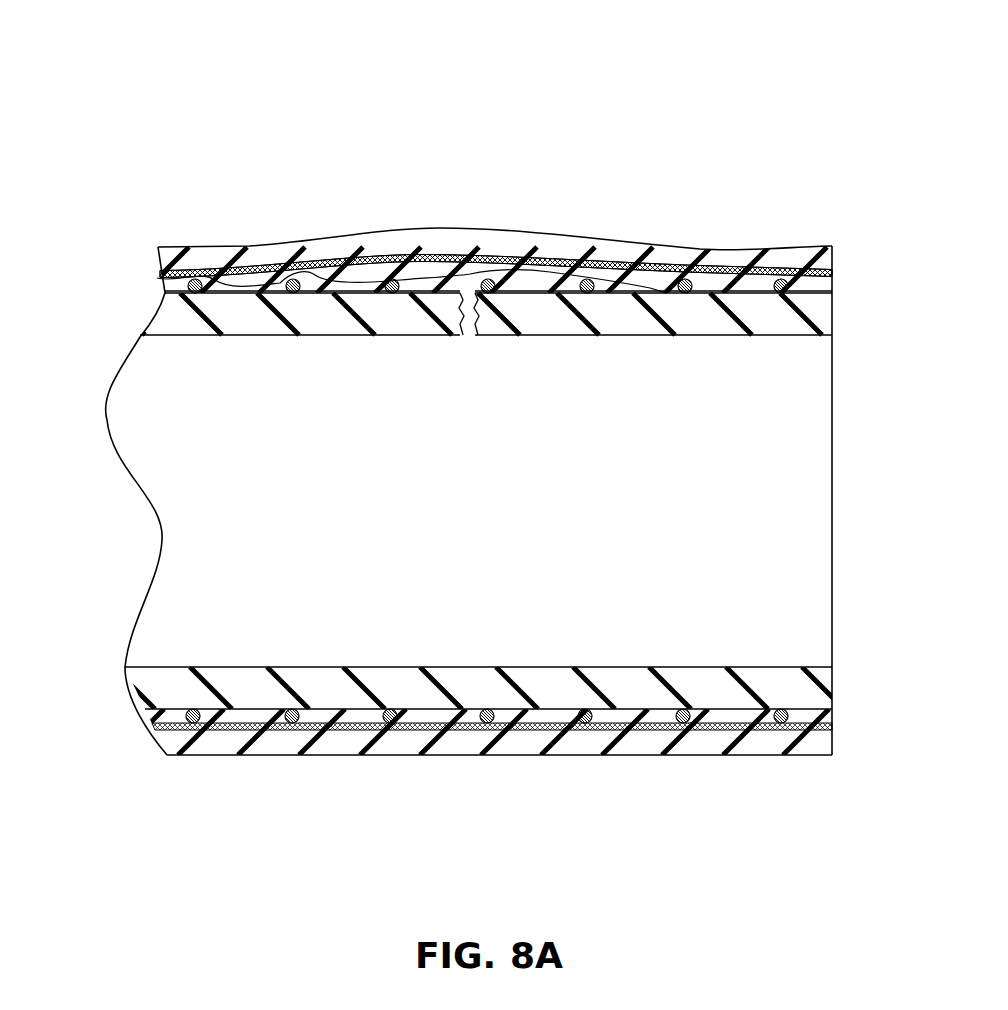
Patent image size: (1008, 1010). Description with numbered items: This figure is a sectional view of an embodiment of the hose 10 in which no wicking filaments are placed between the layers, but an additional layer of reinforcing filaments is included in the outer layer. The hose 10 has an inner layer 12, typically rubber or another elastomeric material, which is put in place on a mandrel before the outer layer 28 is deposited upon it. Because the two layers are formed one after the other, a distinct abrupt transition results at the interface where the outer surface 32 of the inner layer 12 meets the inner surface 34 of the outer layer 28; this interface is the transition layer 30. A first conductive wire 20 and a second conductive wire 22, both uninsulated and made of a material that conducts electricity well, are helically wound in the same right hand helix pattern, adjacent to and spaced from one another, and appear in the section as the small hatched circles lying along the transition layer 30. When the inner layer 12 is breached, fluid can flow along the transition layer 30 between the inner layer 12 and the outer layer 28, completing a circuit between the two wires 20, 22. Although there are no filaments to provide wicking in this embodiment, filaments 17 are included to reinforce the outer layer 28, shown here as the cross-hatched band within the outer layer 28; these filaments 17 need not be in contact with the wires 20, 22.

The hose 10 is at (697, 95).
The inner layer 12 is at (777, 323).
The filaments 17 is at (385, 262).
The first conductive wire 20 is at (486, 278).
The second conductive wire 22 is at (585, 256).
The outer layer 28 is at (730, 260).
The transition layer 30 is at (237, 293).
The outer surface 32 is at (214, 293).
The inner surface 34 is at (176, 295).